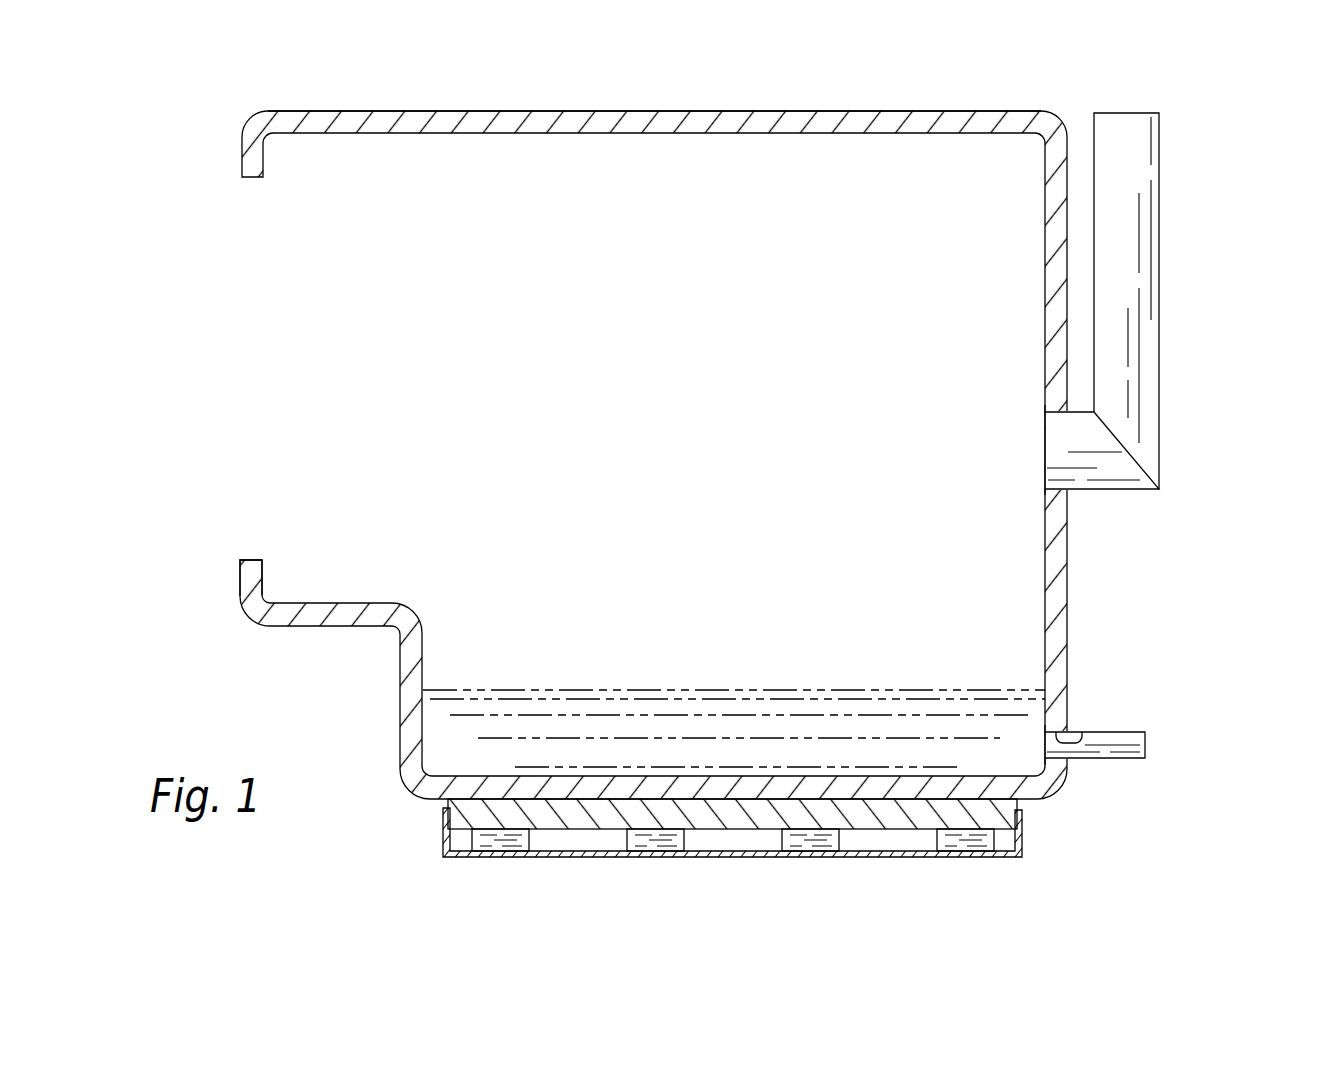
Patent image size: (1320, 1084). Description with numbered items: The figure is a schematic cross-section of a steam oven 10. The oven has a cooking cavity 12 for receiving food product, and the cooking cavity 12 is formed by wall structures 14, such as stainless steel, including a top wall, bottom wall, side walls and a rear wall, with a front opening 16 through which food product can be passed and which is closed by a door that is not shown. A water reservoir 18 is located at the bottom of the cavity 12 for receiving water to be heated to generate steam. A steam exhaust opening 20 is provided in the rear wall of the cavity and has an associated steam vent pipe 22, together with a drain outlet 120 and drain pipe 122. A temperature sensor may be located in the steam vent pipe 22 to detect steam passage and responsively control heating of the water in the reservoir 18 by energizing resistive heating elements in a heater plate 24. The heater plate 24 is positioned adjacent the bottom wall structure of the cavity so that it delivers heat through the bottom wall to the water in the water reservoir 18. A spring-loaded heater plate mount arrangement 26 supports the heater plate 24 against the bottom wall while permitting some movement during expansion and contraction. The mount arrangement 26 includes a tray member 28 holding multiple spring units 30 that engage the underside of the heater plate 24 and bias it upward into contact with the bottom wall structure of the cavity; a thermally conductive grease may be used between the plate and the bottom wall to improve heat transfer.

The steam oven 10 is at (738, 488).
The cooking cavity 12 is at (545, 388).
The wall structures 14 is at (810, 111).
The front opening 16 is at (250, 560).
The water reservoir 18 is at (708, 707).
The steam exhaust opening 20 is at (1053, 414).
The steam vent pipe 22 is at (1131, 252).
The heater plate 24 is at (825, 817).
The spring-loaded heater plate mount arrangement 26 is at (1023, 838).
The tray member 28 is at (712, 771).
The spring units 30 is at (504, 840).
The drain outlet 120 is at (1076, 740).
The drain pipe 122 is at (1121, 748).